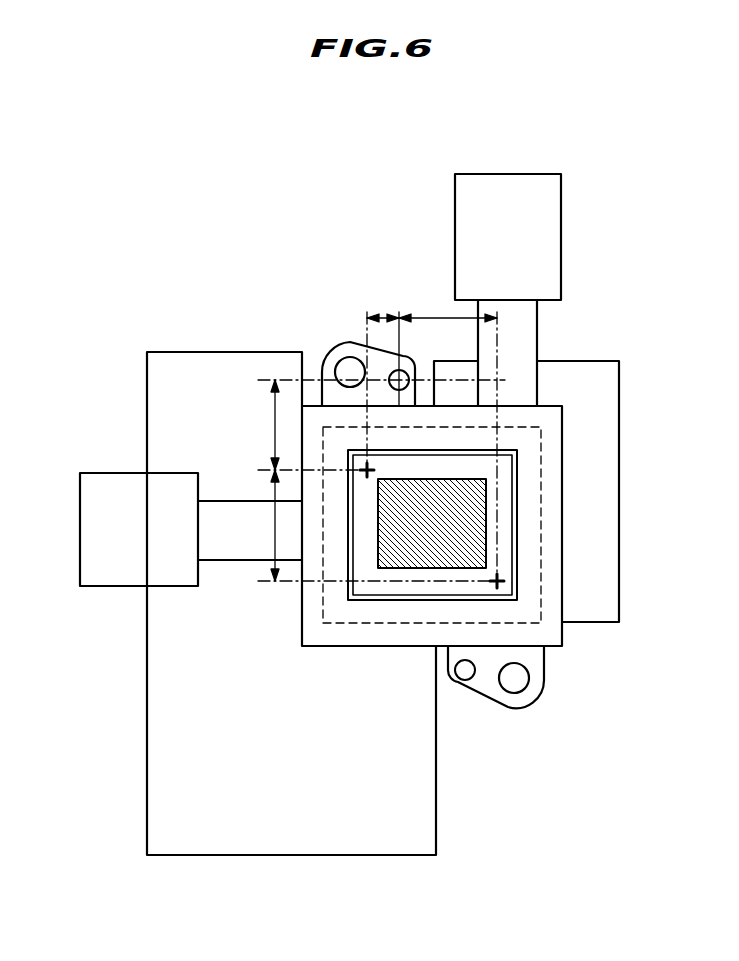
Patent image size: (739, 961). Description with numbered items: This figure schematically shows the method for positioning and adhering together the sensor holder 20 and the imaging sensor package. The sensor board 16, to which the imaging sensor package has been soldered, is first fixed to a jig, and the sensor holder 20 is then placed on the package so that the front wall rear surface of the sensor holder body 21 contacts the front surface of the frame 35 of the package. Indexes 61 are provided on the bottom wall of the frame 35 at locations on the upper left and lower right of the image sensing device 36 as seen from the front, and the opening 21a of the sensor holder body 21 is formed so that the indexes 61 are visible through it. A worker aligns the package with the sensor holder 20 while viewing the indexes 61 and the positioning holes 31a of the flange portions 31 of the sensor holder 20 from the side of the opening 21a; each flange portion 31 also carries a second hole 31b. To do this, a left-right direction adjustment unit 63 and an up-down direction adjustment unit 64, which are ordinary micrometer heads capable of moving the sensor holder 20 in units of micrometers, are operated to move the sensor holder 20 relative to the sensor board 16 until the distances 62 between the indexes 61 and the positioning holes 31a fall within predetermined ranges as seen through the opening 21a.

The sensor board 16 is at (262, 840).
The sensor holder 20 is at (572, 593).
The sensor holder body 21 is at (556, 637).
The opening 21a is at (517, 503).
The flange portion 31 is at (323, 356).
The positioning hole 31a is at (403, 370).
The large hole 31b is at (350, 363).
The frame 35 is at (367, 548).
The image sensing device 36 is at (411, 557).
The index 61 is at (367, 470).
The distance 62 is at (443, 317).
The left-right direction adjustment unit 63 is at (95, 519).
The up-down direction adjustment unit 64 is at (550, 247).